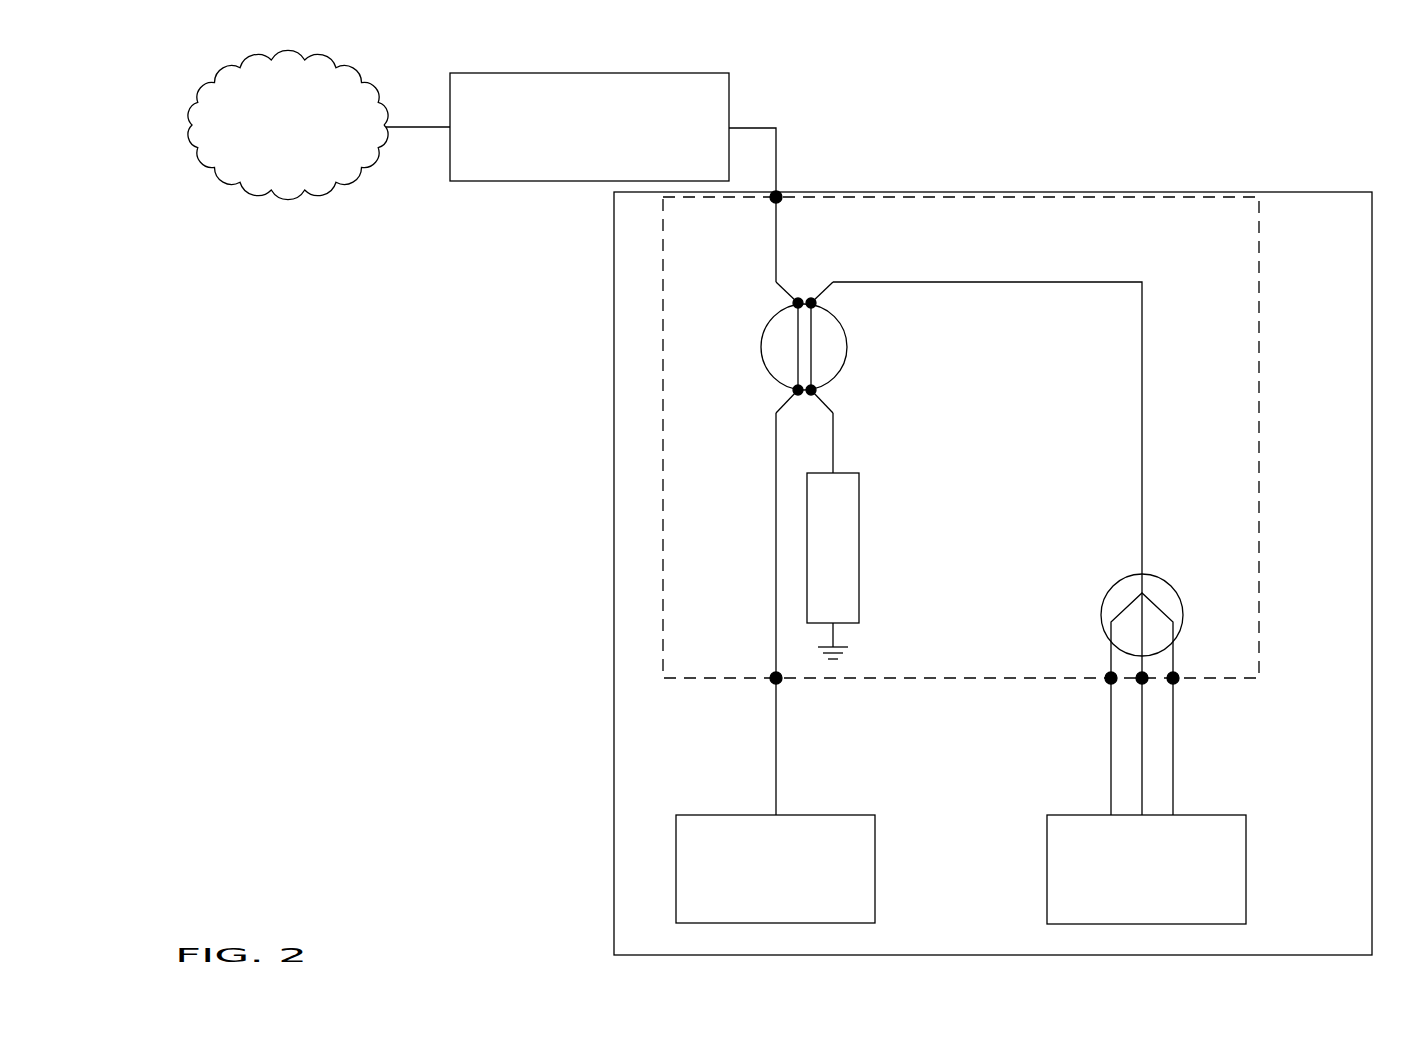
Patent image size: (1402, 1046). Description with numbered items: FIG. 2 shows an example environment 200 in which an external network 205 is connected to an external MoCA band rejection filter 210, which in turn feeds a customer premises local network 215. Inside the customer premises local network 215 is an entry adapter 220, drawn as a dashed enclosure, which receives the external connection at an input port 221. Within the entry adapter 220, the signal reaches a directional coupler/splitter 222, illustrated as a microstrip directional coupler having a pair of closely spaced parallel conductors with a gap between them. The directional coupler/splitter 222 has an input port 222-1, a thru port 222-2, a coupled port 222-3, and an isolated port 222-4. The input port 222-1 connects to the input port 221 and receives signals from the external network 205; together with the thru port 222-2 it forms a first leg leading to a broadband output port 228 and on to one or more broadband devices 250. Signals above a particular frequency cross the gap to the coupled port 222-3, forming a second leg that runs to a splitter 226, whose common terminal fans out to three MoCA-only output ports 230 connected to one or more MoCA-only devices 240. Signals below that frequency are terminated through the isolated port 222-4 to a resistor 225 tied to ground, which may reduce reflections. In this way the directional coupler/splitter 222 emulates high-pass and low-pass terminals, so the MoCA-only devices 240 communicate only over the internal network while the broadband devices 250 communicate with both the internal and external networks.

The environment 200 is at (178, 62).
The external network 205 is at (288, 124).
The external MoCA band rejection filter 210 is at (589, 127).
The customer premises local network 215 is at (1035, 192).
The entry adapter 220 is at (961, 437).
The input port 221 is at (779, 194).
The directional coupler/splitter 222 is at (761, 350).
The input port 222-1 is at (798, 303).
The thru port 222-2 is at (798, 390).
The coupled port 222-3 is at (811, 303).
The isolated port 222-4 is at (811, 390).
The resistor 225 is at (833, 536).
The splitter 226 is at (1101, 615).
The broadband output port 228 is at (781, 682).
The MoCA-only output ports 230 is at (1207, 743).
The MoCA-only devices 240 is at (1146, 869).
The broadband devices 250 is at (775, 869).